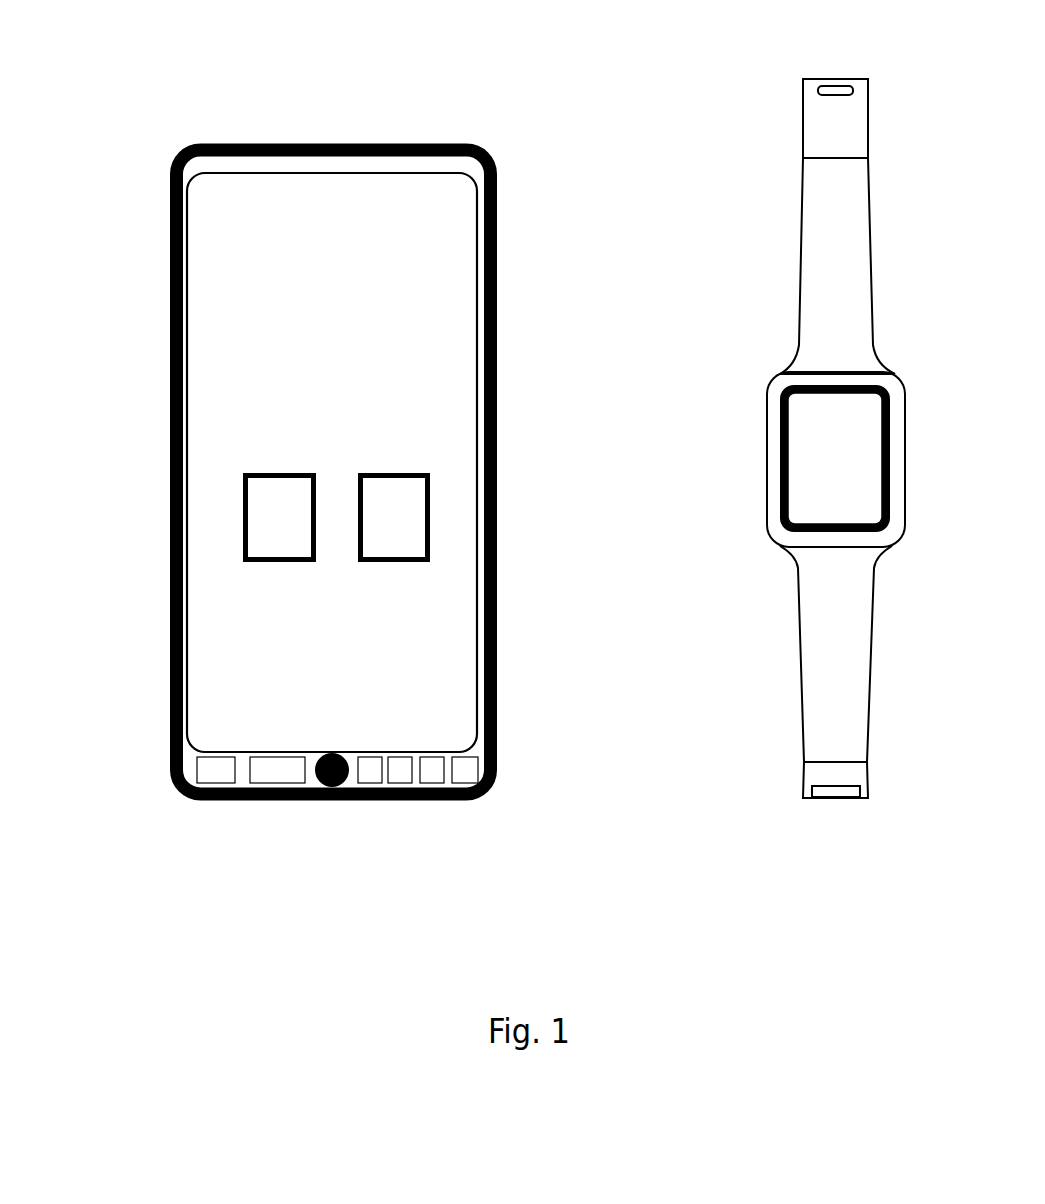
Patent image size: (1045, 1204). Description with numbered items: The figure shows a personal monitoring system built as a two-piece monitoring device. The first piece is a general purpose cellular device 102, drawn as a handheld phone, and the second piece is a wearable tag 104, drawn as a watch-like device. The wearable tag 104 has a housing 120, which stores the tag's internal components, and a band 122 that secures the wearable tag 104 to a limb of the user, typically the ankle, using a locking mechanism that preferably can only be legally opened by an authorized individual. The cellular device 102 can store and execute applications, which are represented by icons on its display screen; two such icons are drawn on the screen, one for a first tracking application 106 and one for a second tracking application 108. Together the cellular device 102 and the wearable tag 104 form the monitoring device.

The general purpose cellular device 102 is at (401, 173).
The wearable tag 104 is at (784, 407).
The first tracking application 106 is at (273, 517).
The second tracking application 108 is at (415, 505).
The housing 120 is at (767, 463).
The band 122 is at (773, 277).